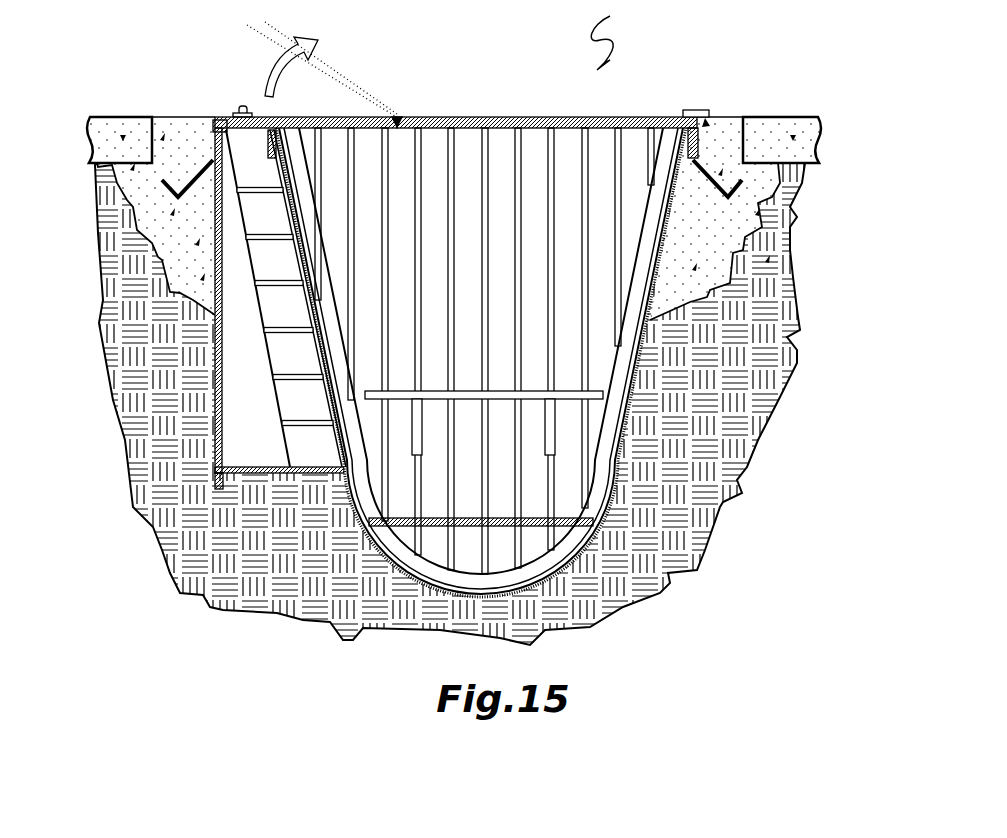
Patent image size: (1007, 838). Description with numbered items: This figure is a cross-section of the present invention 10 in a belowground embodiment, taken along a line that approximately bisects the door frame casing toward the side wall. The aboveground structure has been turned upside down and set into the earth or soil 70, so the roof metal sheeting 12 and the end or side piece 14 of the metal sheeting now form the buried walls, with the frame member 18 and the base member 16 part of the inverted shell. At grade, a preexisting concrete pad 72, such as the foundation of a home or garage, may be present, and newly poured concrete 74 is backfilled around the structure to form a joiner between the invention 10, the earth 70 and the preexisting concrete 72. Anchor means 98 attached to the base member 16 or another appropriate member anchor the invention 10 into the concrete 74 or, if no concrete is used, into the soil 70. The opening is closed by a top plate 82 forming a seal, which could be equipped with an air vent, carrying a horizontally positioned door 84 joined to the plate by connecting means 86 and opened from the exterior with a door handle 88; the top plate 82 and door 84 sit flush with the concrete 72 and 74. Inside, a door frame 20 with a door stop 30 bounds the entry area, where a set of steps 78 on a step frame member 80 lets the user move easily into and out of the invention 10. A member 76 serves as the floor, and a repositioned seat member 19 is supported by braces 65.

The present invention 10 is at (613, 37).
The roof metal sheeting 12 is at (690, 235).
The end or side piece of the metal sheeting 14 is at (530, 147).
The base member 16 is at (702, 142).
The frame member 18 is at (327, 281).
The seat member 19 is at (492, 391).
The door frame 20 is at (248, 472).
The door stop 30 is at (215, 479).
The braces 65 is at (423, 440).
The earth or soil 70 is at (767, 307).
The preexisting concrete pad 72 is at (803, 117).
The newly poured concrete 74 is at (703, 110).
The floor 76 is at (500, 518).
The steps 78 is at (262, 190).
The step frame member 80 is at (240, 215).
The top plate 82 is at (467, 117).
The door 84 is at (333, 117).
The connecting means 86 is at (398, 116).
The door handle 88 is at (241, 103).
The anchor means 98 is at (210, 160).